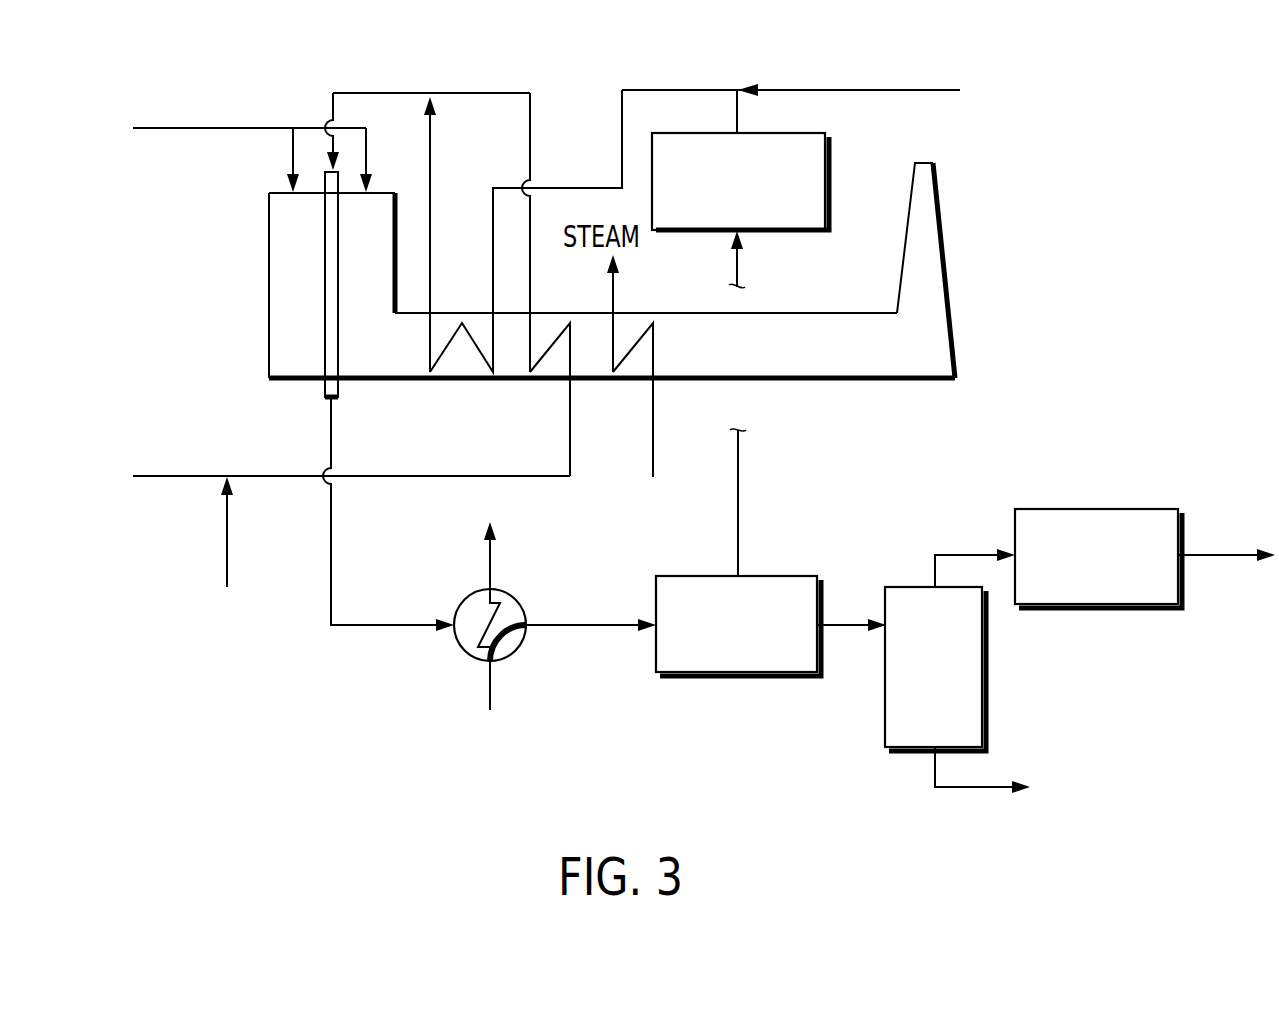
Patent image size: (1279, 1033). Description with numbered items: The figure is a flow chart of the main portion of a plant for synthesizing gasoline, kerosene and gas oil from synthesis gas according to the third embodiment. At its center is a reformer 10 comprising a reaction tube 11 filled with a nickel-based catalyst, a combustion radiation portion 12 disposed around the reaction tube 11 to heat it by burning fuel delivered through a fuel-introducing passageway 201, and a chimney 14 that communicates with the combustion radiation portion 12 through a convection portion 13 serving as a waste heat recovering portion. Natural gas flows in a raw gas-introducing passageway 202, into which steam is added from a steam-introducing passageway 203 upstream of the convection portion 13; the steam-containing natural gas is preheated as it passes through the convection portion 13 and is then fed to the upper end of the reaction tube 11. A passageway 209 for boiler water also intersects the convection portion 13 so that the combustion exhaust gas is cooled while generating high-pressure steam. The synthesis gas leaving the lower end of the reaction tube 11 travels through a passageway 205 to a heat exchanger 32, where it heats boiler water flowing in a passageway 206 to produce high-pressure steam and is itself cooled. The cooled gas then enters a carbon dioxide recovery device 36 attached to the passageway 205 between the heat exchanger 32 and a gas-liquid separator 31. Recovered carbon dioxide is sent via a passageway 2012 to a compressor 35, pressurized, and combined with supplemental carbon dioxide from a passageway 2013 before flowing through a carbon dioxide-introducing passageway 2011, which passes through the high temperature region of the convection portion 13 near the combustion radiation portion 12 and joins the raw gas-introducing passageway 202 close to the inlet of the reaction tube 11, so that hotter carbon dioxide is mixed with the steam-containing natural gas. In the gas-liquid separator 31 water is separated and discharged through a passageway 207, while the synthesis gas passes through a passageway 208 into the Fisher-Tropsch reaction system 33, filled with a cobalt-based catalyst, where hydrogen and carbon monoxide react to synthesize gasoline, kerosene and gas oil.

The reformer 10 is at (230, 272).
The reaction tube 11 is at (325, 236).
The combustion radiation portion 12 is at (268, 348).
The convection portion 13 is at (508, 372).
The chimney 14 is at (935, 245).
The gas-liquid separator 31 is at (984, 657).
The heat exchanger 32 is at (517, 603).
The Fisher-Tropsch (FT) reaction system 33 is at (1147, 518).
The compressor 35 is at (826, 157).
The carbon dioxide recovery device 36 is at (794, 586).
The fuel-introducing passageway 201 is at (157, 130).
The raw gas-introducing passageway 202 is at (148, 478).
The steam-introducing passageway 203 is at (228, 550).
The passageway 205 is at (368, 627).
The passageway 206 is at (492, 693).
The passageway 207 is at (991, 790).
The passageway 208 is at (961, 554).
The passageway 209 is at (652, 437).
The carbon dioxide-introducing passageway 2011 is at (572, 188).
The passageway 2012 is at (740, 466).
The passageway 2013 is at (918, 92).